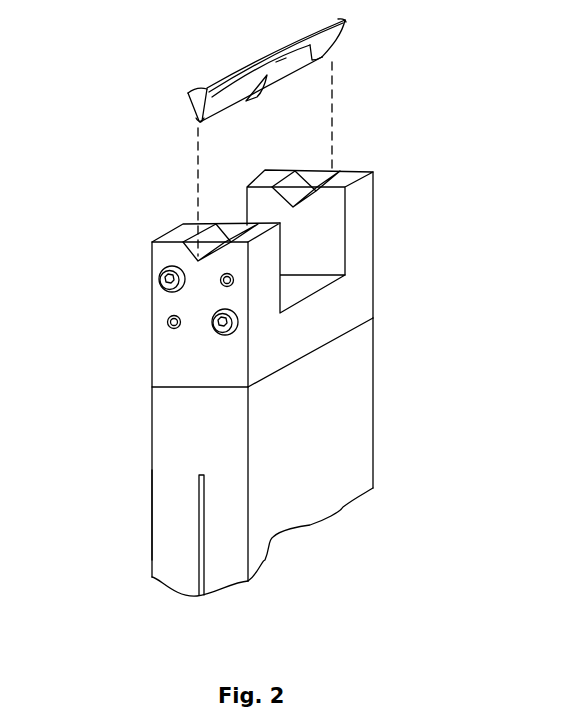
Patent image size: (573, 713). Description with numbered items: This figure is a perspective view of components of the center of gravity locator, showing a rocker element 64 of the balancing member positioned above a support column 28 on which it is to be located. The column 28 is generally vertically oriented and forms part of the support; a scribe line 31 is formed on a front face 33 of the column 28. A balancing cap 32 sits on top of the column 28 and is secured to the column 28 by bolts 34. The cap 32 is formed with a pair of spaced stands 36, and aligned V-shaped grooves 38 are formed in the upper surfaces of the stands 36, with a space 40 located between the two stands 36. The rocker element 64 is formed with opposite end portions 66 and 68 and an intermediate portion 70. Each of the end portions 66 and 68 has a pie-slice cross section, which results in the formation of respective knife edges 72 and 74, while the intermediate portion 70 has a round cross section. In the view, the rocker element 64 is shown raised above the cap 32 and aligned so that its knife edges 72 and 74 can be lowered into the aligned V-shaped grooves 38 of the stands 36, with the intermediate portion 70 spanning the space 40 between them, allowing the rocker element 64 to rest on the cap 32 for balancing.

The column 28 is at (347, 460).
The scribe line 31 is at (203, 560).
The balancing cap 32 is at (374, 297).
The front face 33 is at (168, 490).
The bolts 34 is at (157, 292).
The stands 36 is at (158, 257).
The V-shaped grooves 38 is at (218, 236).
The space 40 is at (317, 237).
The rocker element 64 is at (199, 87).
The end portion 66 is at (223, 90).
The end portion 68 is at (348, 22).
The intermediate portion 70 is at (279, 66).
The knife edge 72 is at (200, 132).
The knife edge 74 is at (328, 62).